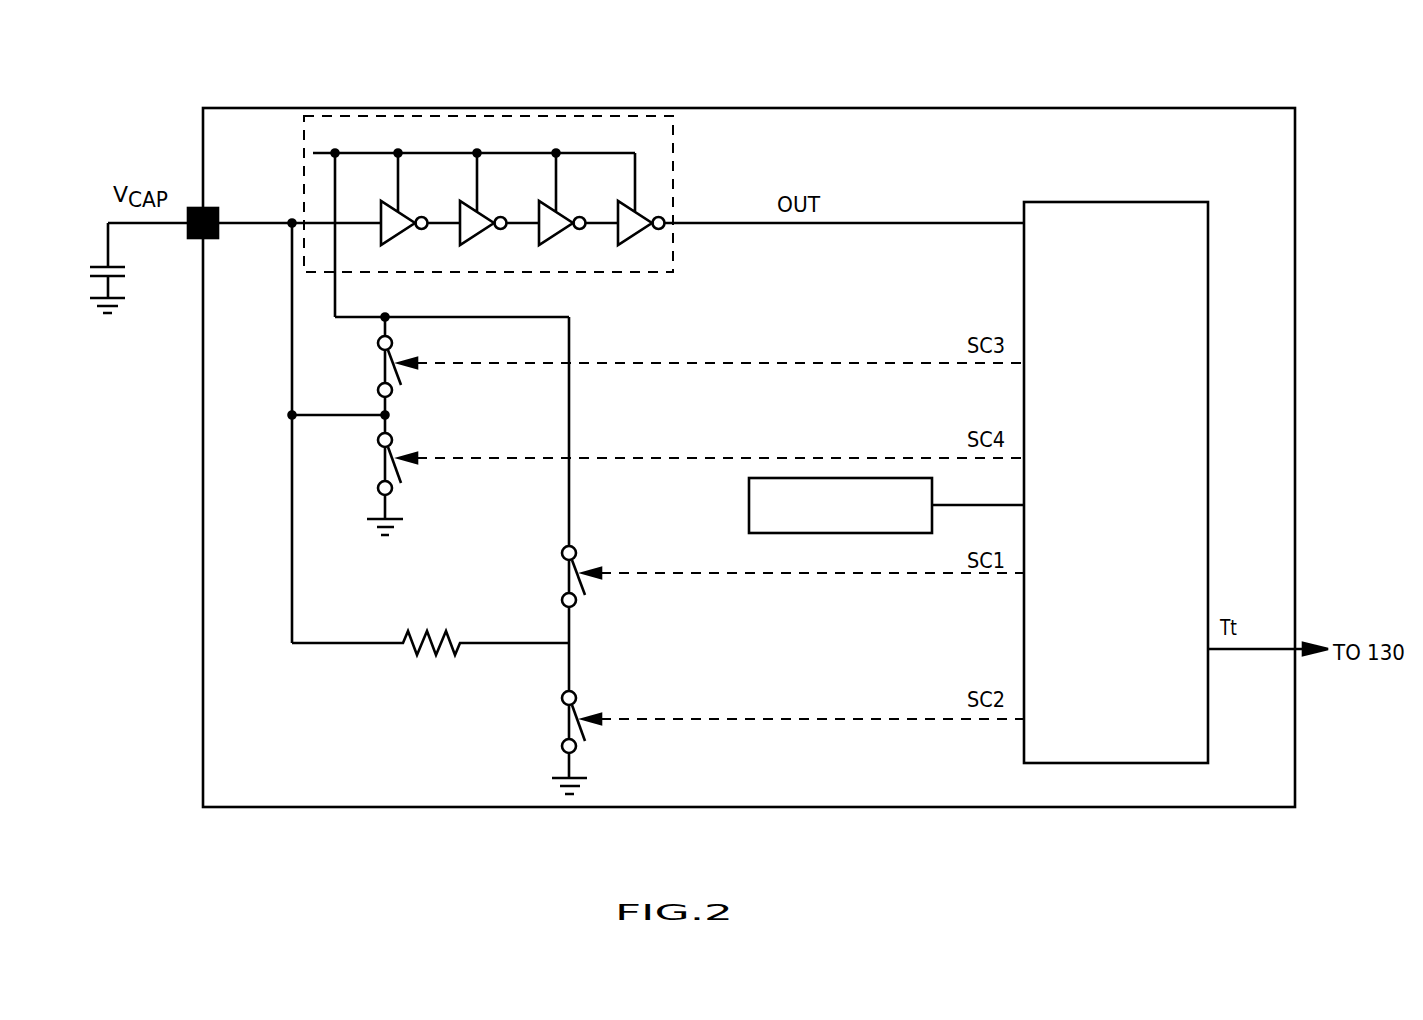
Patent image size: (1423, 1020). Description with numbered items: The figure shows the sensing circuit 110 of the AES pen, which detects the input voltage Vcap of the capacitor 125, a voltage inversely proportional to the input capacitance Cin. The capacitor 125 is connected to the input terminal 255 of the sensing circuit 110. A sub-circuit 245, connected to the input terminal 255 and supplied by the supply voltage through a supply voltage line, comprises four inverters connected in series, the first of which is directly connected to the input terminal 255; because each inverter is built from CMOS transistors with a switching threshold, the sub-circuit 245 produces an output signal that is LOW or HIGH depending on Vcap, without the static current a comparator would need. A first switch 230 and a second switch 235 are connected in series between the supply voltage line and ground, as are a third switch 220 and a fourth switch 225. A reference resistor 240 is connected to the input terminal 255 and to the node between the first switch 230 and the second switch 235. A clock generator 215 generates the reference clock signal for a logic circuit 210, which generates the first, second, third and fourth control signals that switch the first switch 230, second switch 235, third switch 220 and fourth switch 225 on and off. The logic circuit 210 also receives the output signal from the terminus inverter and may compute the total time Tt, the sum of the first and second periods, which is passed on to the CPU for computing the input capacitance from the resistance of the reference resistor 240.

The sensing circuit 110 is at (753, 108).
The capacitor 125 is at (100, 267).
The logic circuit 210 is at (1103, 202).
The clock generator 215 is at (749, 508).
The third switch 220 is at (401, 382).
The fourth switch 225 is at (401, 475).
The first switch 230 is at (585, 592).
The second switch 235 is at (585, 739).
The reference resistor 240 is at (437, 630).
The sub-circuit 245 is at (534, 218).
The input terminal 255 is at (197, 208).